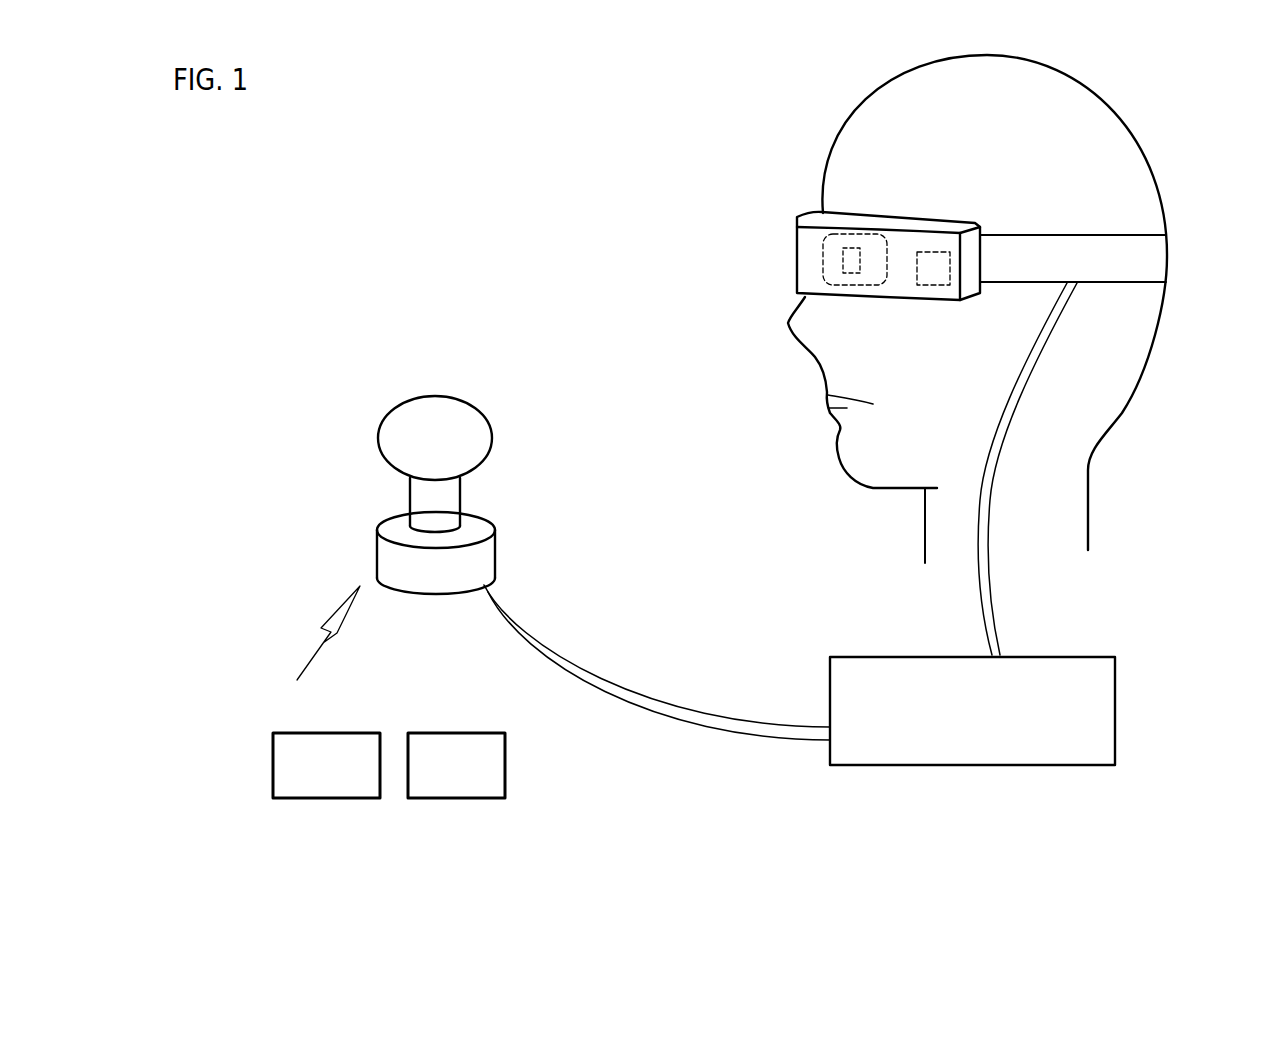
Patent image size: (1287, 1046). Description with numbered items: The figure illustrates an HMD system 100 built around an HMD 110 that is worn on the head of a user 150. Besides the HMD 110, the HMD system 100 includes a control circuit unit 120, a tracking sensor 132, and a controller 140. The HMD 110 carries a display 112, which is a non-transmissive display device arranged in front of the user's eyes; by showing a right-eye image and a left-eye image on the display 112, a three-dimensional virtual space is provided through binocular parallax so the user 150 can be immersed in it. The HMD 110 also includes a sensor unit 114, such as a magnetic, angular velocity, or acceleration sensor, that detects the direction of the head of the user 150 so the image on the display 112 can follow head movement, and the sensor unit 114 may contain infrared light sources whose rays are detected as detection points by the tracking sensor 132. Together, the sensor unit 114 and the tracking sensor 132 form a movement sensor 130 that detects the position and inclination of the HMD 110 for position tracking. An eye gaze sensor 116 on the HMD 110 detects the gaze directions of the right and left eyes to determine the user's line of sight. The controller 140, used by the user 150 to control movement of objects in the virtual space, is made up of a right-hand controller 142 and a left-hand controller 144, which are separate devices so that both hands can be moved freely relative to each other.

The HMD system 100 is at (710, 136).
The HMD 110 is at (913, 408).
The display 112 is at (825, 255).
The sensor unit 114 is at (920, 284).
The eye gaze sensor 116 is at (860, 255).
The control circuit unit 120 is at (1115, 703).
The movement sensor 130 is at (603, 519).
The tracking sensor 132 is at (475, 413).
The controller 140 is at (389, 744).
The right-hand controller 142 is at (450, 798).
The left-hand controller 144 is at (323, 798).
The user 150 is at (1150, 167).